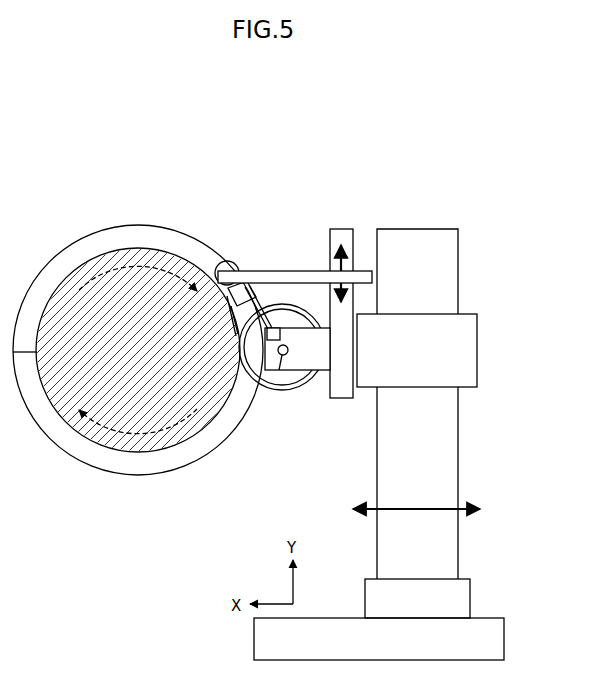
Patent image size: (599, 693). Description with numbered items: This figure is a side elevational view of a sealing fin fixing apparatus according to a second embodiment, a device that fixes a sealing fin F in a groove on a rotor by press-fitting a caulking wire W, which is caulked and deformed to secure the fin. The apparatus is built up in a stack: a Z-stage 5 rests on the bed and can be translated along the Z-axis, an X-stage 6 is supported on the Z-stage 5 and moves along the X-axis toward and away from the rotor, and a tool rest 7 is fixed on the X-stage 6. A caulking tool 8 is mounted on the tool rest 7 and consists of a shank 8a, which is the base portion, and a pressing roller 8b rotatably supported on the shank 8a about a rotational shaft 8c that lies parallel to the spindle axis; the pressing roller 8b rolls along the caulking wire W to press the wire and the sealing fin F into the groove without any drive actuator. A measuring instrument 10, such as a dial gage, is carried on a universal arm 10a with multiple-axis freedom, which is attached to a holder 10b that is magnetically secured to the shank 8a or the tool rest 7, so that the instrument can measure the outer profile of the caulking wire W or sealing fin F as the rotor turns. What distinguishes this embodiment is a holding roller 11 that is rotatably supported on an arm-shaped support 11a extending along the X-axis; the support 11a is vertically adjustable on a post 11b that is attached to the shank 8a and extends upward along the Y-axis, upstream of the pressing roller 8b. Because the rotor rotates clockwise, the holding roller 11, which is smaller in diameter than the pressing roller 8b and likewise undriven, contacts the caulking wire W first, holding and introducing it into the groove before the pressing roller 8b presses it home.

The Z-stage 5 is at (504, 637).
The X-stage 6 is at (416, 229).
The tool rest 7 is at (478, 350).
The caulking tool 8 is at (284, 387).
The shank 8a is at (318, 388).
The pressing roller 8b is at (287, 391).
The rotational shaft 8c is at (272, 381).
The measuring instrument 10 is at (268, 283).
The universal arm 10a is at (270, 304).
The holder 10b is at (285, 335).
The holding roller 11 is at (228, 261).
The support 11a is at (292, 271).
The post 11b is at (341, 229).
The sealing fin F is at (73, 243).
The caulking wire W is at (137, 248).